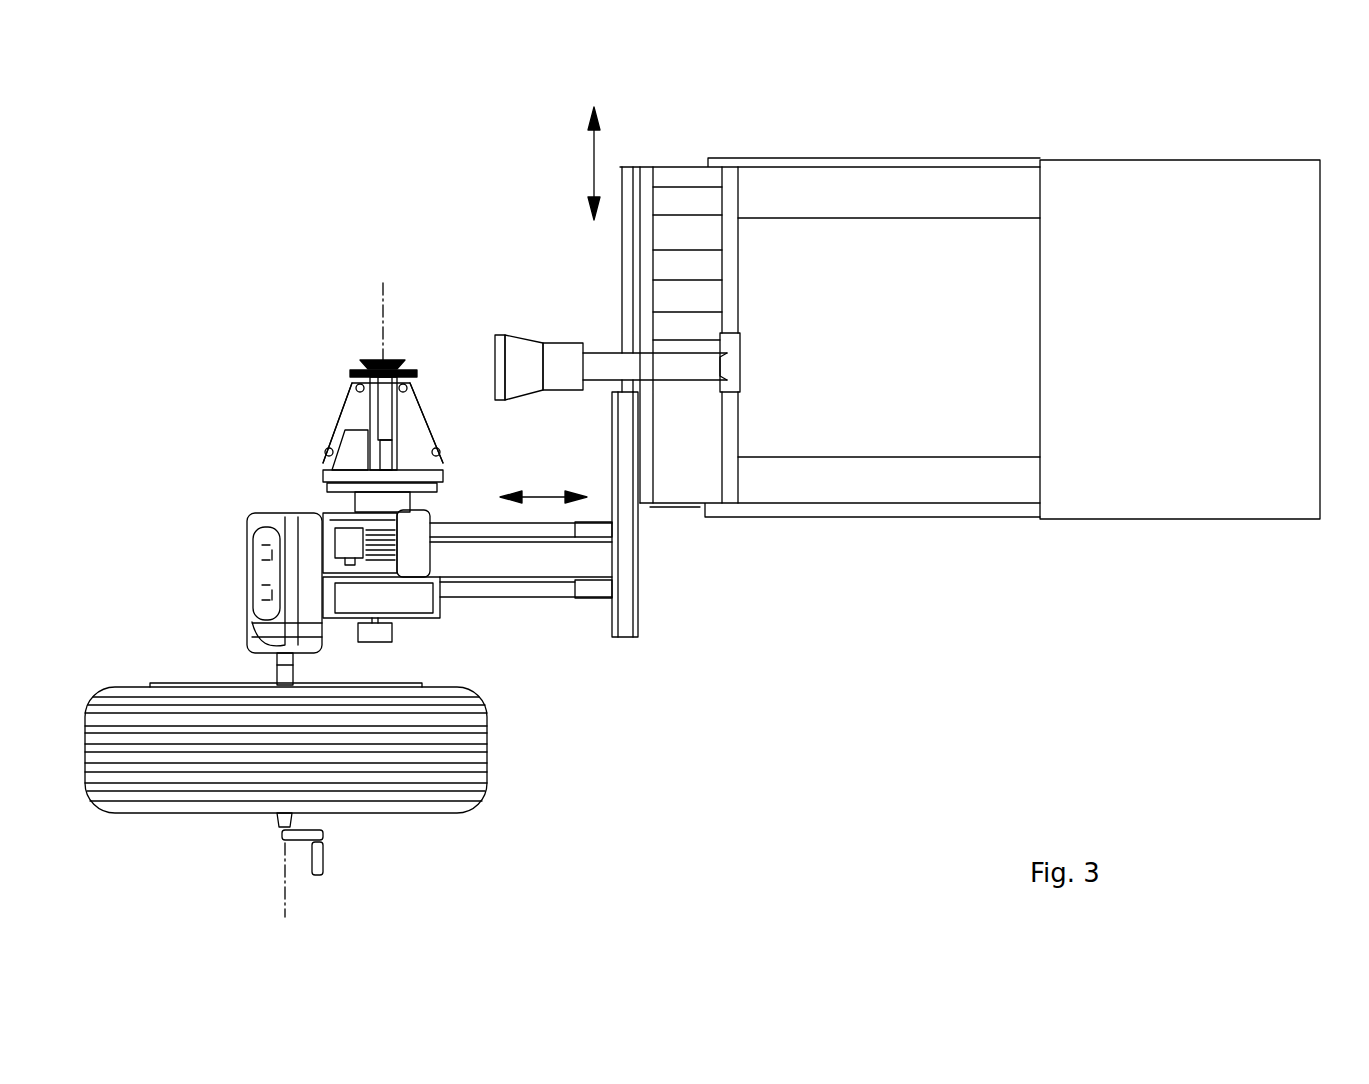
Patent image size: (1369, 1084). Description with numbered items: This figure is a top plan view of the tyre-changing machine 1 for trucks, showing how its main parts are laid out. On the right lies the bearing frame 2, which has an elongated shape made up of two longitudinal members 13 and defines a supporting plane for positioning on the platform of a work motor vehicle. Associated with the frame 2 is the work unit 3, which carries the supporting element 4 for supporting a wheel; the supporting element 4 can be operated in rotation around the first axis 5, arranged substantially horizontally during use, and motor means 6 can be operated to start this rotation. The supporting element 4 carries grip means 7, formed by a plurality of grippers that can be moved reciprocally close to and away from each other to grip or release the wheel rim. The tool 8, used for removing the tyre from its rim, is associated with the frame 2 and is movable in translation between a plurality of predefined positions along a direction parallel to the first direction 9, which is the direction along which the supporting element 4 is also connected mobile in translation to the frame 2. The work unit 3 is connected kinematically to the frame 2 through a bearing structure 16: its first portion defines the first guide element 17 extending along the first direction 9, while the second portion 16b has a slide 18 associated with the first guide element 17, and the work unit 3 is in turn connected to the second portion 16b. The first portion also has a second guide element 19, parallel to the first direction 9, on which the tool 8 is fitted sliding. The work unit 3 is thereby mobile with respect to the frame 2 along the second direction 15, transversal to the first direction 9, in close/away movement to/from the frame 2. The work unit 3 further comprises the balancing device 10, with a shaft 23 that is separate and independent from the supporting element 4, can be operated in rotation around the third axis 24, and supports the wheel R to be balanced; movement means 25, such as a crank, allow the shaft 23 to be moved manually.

The tyre-changing machine 1 is at (252, 181).
The bearing frame 2 is at (1168, 140).
The work unit 3 is at (212, 477).
The supporting element 4 is at (330, 404).
The first axis 5 is at (383, 283).
The motor means 6 is at (387, 528).
The grip means 7 is at (353, 400).
The tool 8 is at (510, 352).
The first direction 9 is at (597, 152).
The balancing device 10 is at (232, 571).
The longitudinal members 13 is at (908, 197).
The second direction 15 is at (542, 495).
The bearing structure 16 is at (572, 632).
The second portion 16b is at (505, 587).
The first guide element 17 is at (633, 260).
The slide 18 is at (625, 604).
The second guide element 19 is at (730, 310).
The shaft 23 is at (283, 672).
The third axis 24 is at (272, 912).
The movement means 25 is at (318, 858).
The wheel R is at (490, 810).